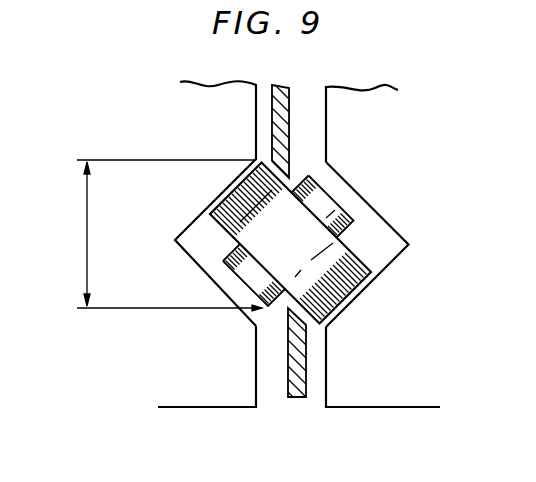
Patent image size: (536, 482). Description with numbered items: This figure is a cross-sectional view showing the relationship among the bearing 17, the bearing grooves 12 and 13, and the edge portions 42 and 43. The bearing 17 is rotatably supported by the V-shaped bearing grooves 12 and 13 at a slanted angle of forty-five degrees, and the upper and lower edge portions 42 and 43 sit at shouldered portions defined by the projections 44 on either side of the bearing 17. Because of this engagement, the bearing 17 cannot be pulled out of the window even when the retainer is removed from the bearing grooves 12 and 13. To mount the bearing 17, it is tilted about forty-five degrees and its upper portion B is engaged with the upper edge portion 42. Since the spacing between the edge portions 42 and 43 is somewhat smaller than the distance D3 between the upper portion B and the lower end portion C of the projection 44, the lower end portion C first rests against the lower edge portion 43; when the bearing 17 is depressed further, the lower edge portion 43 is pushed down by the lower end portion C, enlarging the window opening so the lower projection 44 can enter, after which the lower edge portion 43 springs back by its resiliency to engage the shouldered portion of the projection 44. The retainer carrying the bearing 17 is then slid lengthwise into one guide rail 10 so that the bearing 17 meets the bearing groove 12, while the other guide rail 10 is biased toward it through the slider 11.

The guide rail 10 is at (406, 407).
The slider 11 is at (204, 407).
The bearing groove 12 is at (392, 242).
The bearing groove 13 is at (200, 263).
The bearing 17 is at (360, 287).
The upper edge portion 42 is at (290, 140).
The lower edge portion 43 is at (293, 398).
The projection 44 is at (337, 203).
The upper portion of the bearing B is at (255, 159).
The lower end portion of the projection C is at (255, 296).
The distance between upper portion B and lower end portion C D3 is at (163, 235).